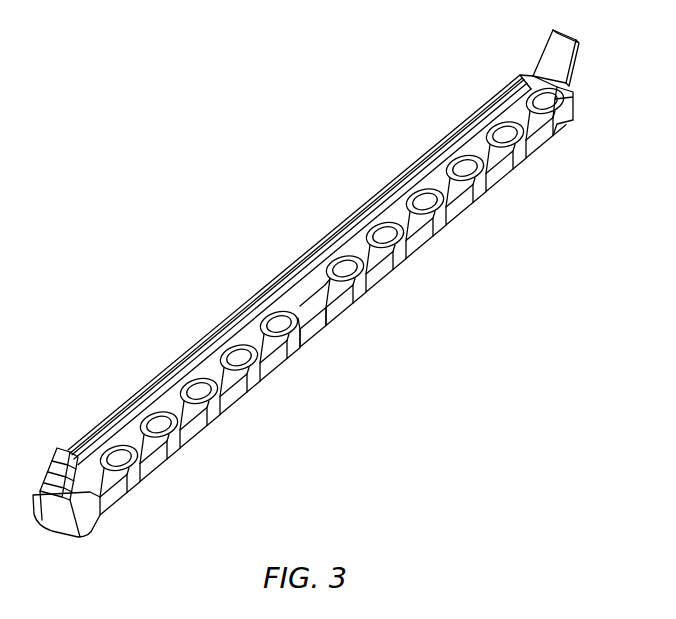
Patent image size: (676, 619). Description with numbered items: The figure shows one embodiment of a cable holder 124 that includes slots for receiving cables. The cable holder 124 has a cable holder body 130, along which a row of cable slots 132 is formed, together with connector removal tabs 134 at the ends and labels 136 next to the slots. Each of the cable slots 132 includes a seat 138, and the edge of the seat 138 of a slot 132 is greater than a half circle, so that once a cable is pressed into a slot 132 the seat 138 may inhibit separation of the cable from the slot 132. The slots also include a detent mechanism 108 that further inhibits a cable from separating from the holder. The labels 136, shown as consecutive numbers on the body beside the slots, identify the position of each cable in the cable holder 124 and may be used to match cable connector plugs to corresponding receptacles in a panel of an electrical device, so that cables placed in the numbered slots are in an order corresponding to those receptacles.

The detent mechanism 108 is at (445, 231).
The cable holder 124 is at (235, 259).
The cable holder body 130 is at (196, 342).
The cable slots 132 is at (159, 414).
The connector removal tabs 134 is at (569, 74).
The labels 136 is at (550, 141).
The seats 138 is at (343, 258).